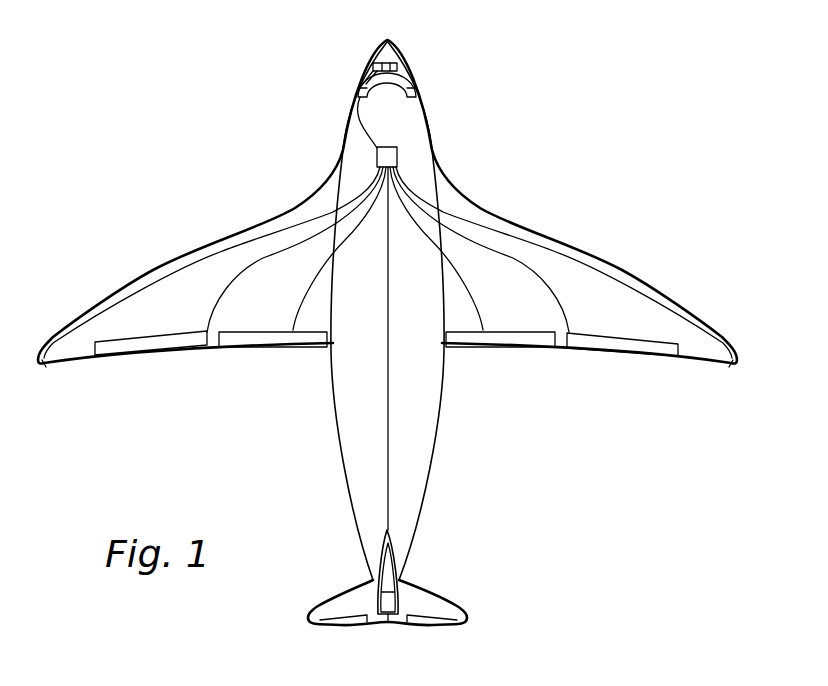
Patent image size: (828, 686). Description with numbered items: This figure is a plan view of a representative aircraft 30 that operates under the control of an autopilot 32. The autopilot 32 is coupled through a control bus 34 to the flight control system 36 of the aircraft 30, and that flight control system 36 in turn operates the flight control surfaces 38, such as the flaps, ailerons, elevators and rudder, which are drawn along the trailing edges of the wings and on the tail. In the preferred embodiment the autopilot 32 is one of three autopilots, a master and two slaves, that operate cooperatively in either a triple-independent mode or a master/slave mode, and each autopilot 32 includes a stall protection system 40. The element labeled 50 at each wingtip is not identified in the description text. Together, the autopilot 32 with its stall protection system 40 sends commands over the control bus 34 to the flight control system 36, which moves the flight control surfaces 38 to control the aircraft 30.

The aircraft 30 is at (240, 104).
The autopilot 32 is at (375, 63).
The control bus 34 is at (373, 170).
The flight control system 36 is at (397, 159).
The flight control surfaces 38 is at (145, 352).
The stall protection system 40 is at (390, 62).
The wingtip 50 is at (45, 367).